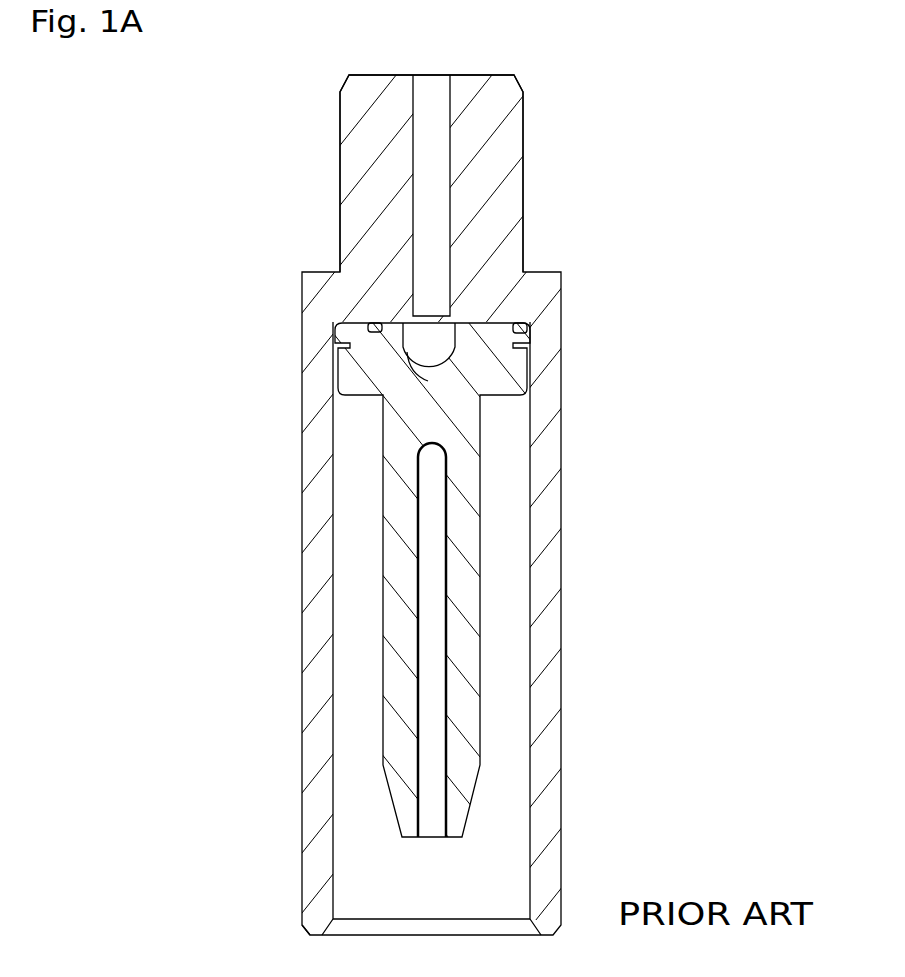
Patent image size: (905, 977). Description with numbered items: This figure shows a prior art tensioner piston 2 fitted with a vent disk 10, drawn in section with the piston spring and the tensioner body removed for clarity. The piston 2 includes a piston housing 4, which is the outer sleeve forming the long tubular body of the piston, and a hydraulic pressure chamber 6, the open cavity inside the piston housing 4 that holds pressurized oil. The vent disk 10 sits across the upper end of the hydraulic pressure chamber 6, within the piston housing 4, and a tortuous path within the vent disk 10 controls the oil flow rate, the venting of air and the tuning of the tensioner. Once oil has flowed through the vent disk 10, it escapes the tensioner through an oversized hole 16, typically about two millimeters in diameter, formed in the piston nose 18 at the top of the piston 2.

The tensioner piston 2 is at (657, 148).
The piston housing 4 is at (312, 419).
The hydraulic pressure chamber 6 is at (347, 729).
The vent disk 10 is at (388, 343).
The oversized hole 16 is at (413, 79).
The piston nose 18 is at (503, 110).